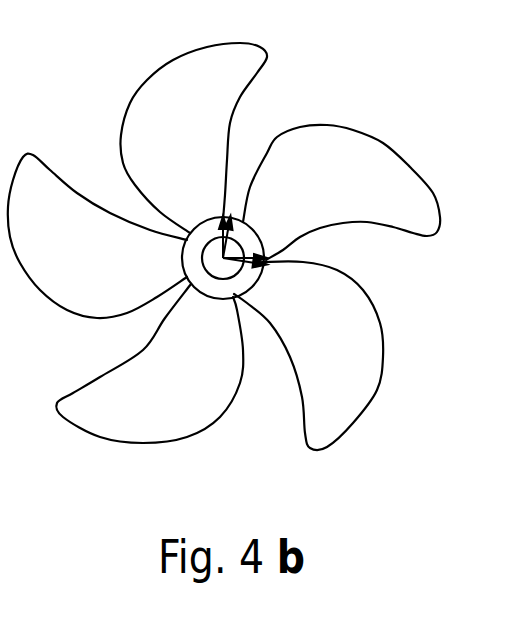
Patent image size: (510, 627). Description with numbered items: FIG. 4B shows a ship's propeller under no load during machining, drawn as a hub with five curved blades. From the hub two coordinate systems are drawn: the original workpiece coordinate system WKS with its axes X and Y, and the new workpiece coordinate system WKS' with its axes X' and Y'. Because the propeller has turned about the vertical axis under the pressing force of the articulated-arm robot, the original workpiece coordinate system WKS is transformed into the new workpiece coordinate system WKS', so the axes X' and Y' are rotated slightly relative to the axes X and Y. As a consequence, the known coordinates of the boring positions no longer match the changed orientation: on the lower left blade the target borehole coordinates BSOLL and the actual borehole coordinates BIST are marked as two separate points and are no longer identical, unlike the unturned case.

The workpiece coordinate system WKS is at (161, 138).
The new workpiece coordinate system WKS' is at (337, 176).
The X axis of workpiece coordinate system WKS X is at (251, 247).
The X' axis of workpiece coordinate system WKS' X' is at (257, 274).
The Y axis of workpiece coordinate system WKS Y is at (216, 228).
The Y' axis of workpiece coordinate system WKS' Y' is at (234, 226).
The target borehole coordinates BSOLL is at (88, 397).
The actual borehole coordinates BIST is at (109, 410).